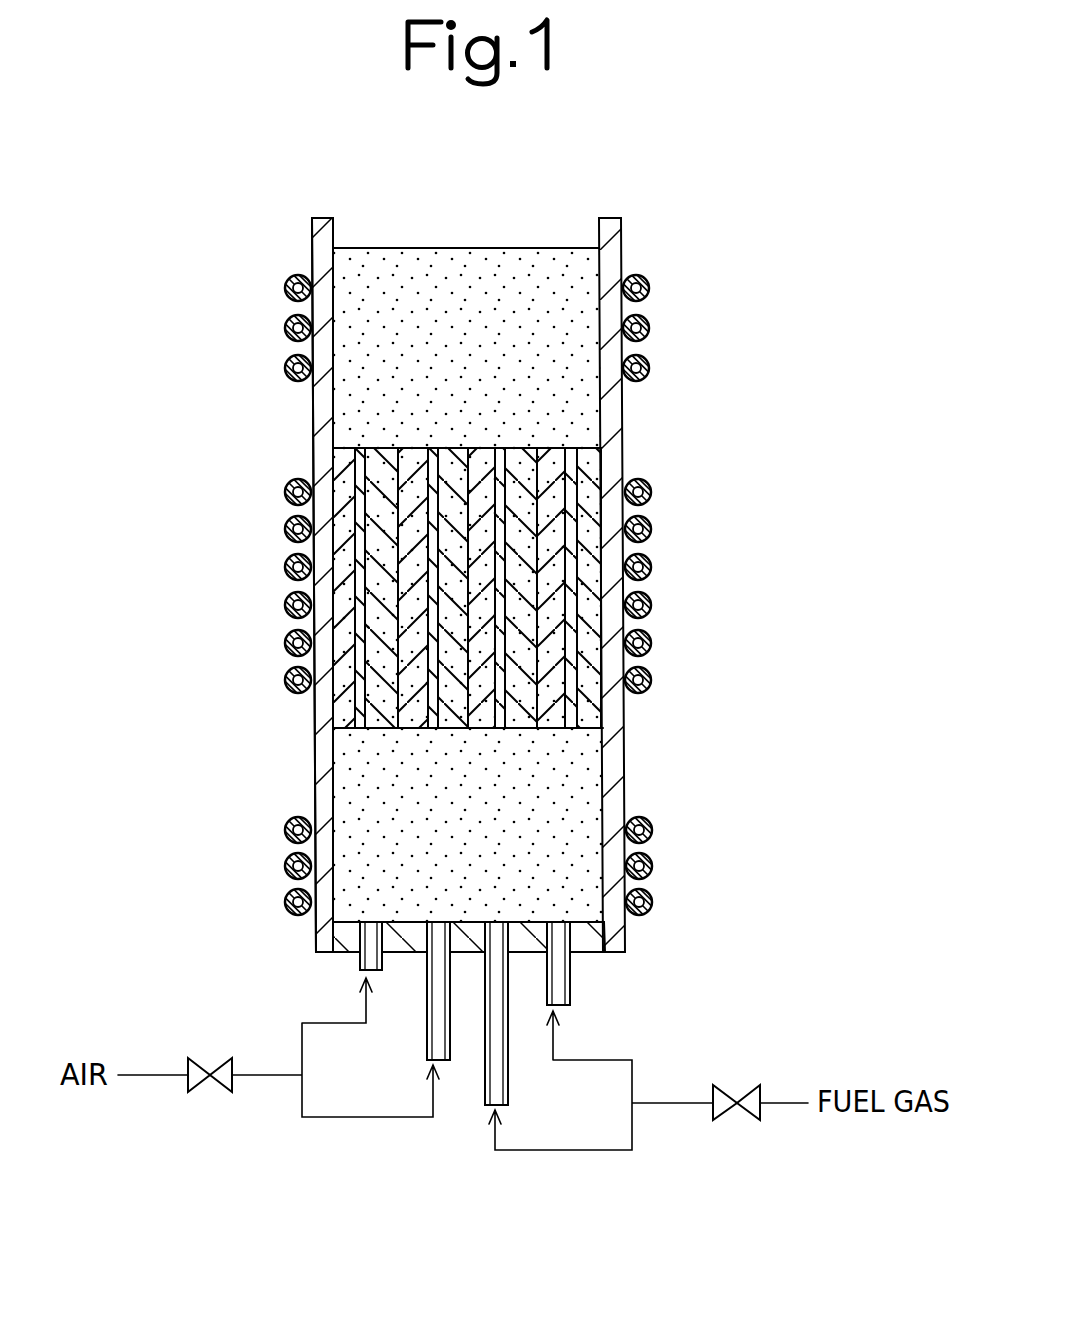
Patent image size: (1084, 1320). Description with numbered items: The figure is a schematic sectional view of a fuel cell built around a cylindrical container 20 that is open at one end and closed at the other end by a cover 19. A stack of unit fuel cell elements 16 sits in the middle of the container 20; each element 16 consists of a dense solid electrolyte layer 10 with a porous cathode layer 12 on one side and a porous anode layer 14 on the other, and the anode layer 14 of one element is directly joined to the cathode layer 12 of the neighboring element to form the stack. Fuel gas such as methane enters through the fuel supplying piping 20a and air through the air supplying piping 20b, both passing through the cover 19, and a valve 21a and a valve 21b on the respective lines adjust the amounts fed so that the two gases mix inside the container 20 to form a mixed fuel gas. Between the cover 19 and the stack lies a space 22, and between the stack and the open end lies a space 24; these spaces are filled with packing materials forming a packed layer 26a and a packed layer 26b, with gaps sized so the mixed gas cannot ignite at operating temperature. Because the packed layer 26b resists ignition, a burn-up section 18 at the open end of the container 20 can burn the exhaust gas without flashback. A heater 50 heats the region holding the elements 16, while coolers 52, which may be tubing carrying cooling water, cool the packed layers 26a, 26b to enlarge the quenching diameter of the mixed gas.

The burn-up section 18 is at (533, 210).
The cylindrical container 20 is at (322, 253).
The cover 19 is at (595, 953).
The space 24 is at (547, 355).
The space 22 is at (355, 792).
The packed layer 26a is at (593, 757).
The packed layer 26b is at (568, 405).
The unit fuel cell element 16 is at (370, 551).
The solid electrolyte layer 10 is at (360, 447).
The porous cathode layer 12 is at (375, 447).
The porous anode layer 14 is at (340, 447).
The heater 50 is at (672, 477).
The cooler 52 is at (672, 272).
The fuel supplying piping 20a is at (570, 990).
The air supplying piping 20b is at (362, 963).
The valve 21a is at (742, 1113).
The valve 21b is at (213, 1087).